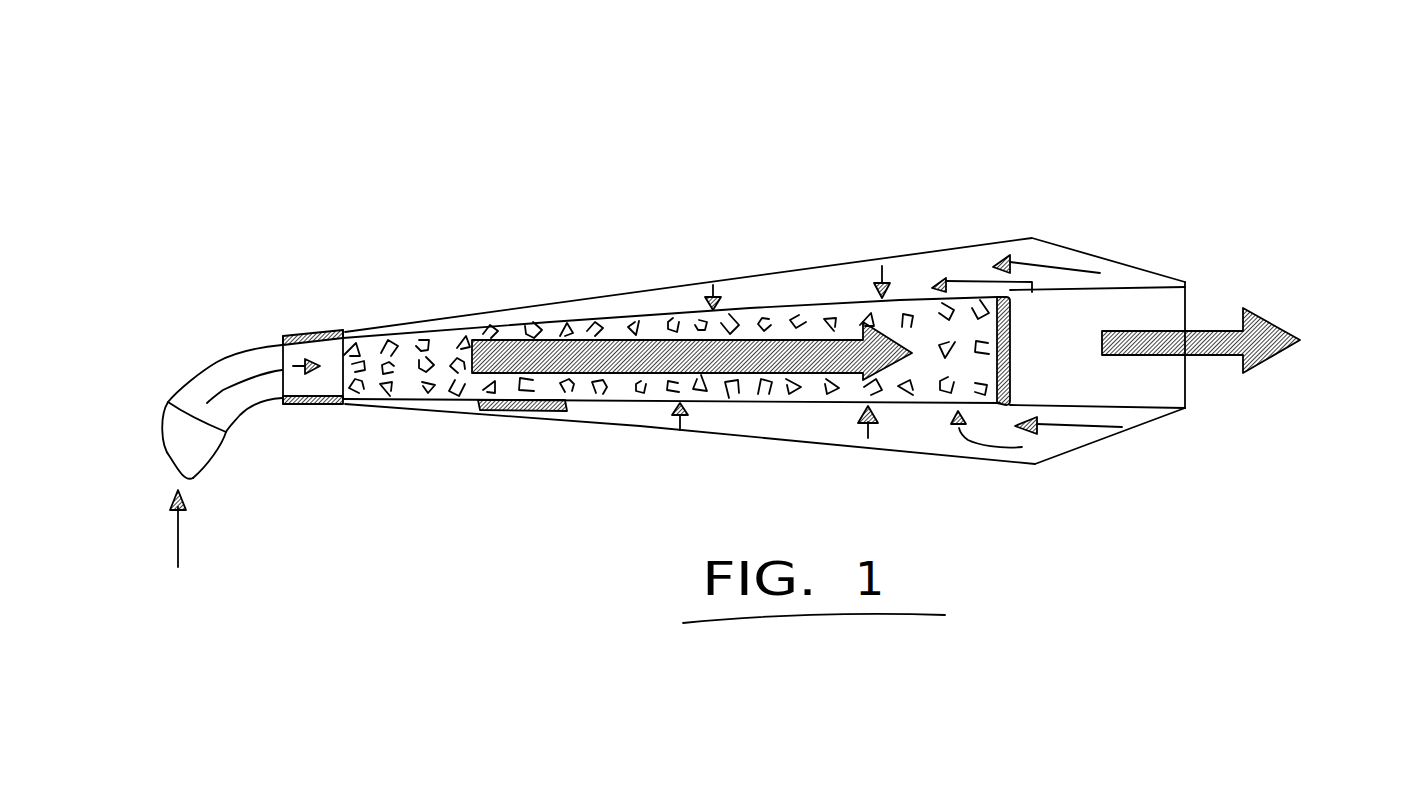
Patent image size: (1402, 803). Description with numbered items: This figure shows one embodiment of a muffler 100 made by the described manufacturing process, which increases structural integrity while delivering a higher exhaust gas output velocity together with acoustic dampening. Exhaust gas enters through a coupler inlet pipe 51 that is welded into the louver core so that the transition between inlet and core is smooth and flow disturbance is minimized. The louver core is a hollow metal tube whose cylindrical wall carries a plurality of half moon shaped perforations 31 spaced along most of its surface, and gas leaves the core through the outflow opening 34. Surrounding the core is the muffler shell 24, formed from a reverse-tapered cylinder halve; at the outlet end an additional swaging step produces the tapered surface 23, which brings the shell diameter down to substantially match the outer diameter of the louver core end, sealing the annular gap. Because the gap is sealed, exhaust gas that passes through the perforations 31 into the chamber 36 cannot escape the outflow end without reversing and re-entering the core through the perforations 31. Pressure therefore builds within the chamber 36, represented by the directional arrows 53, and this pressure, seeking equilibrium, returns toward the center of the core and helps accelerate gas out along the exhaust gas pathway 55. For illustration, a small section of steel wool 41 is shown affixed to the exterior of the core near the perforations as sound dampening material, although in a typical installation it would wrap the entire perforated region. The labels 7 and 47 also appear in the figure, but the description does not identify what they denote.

The muffler 100 is at (660, 235).
The outer housing wall 7 is at (740, 443).
The surface 23 is at (1098, 437).
The muffler shell 24 is at (906, 251).
The perforations 31 is at (623, 322).
The outflow opening 34 is at (1167, 312).
The chamber 36 is at (643, 417).
The steel wool 41 is at (513, 406).
The housing end wall 47 is at (1185, 283).
The coupler inlet pipe 51 is at (218, 368).
The directional arrows 53 is at (868, 432).
The exhaust gas pathway 55 is at (178, 537).